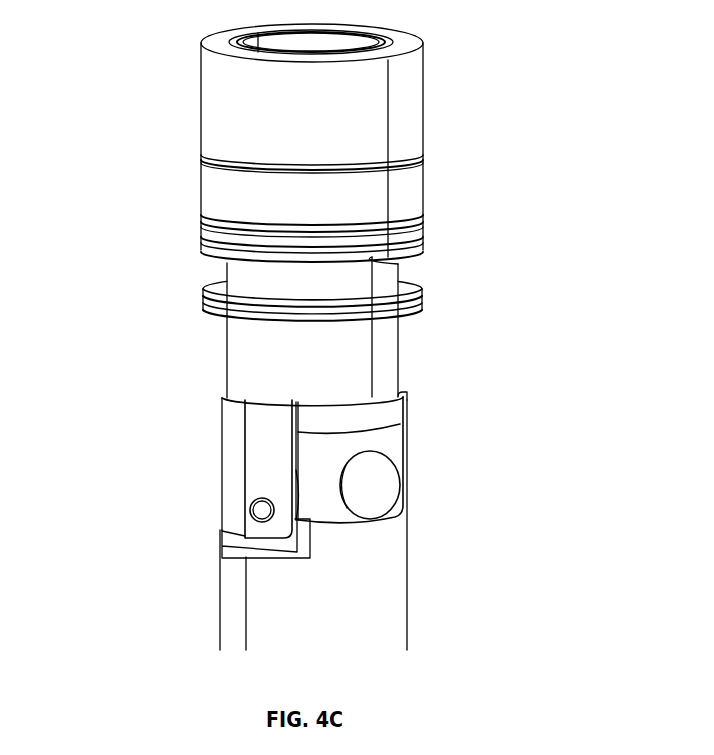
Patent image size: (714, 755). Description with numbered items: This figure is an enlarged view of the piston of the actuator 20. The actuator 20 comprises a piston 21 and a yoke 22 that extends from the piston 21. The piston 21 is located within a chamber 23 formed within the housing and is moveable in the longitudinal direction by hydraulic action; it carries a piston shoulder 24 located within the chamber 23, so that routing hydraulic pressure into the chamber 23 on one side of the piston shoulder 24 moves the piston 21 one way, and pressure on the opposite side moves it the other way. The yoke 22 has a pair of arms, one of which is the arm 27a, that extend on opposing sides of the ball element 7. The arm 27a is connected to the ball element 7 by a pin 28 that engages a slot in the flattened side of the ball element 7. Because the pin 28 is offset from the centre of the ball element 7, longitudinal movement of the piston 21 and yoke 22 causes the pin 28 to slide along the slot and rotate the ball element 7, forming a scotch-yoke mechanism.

The actuator 20 is at (522, 279).
The chamber 23 is at (233, 275).
The piston shoulder 24 is at (210, 308).
The piston 21 is at (248, 345).
The yoke 22 is at (230, 435).
The ball element 7 is at (378, 490).
The arm 27a is at (232, 485).
The pin 28 is at (265, 510).